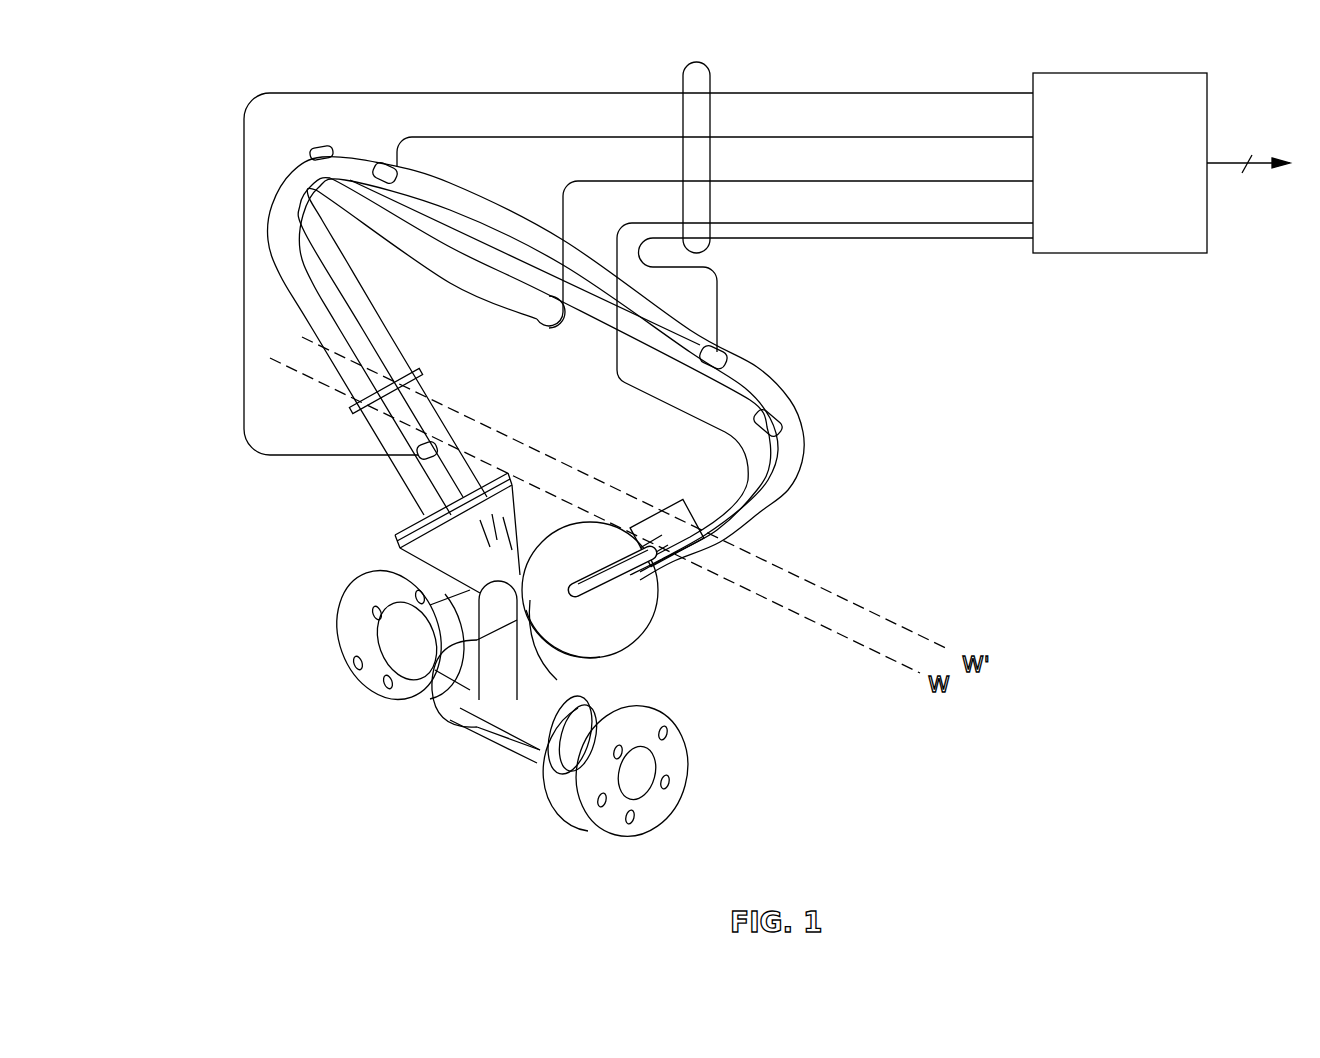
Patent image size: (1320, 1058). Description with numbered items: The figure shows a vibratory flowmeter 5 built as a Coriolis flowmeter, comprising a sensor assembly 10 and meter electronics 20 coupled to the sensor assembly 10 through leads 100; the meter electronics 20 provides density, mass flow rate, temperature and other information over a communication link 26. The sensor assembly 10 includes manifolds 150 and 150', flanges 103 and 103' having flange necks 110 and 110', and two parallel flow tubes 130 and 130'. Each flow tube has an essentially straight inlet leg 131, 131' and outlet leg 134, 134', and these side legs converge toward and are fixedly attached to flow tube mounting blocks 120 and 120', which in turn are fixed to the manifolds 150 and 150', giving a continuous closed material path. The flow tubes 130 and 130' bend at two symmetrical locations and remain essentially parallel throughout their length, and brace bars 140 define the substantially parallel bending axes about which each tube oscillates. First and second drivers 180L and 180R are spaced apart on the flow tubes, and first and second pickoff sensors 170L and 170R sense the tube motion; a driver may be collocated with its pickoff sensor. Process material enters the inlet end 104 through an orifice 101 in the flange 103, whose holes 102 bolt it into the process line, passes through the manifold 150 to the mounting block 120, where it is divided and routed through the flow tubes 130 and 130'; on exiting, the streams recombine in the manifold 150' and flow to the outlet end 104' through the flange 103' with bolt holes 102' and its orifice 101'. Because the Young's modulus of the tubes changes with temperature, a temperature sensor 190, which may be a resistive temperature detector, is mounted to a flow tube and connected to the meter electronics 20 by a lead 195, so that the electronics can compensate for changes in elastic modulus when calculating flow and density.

The vibratory flowmeter 5 is at (1140, 510).
The sensor assembly 10 is at (730, 600).
The meter electronics 20 is at (1155, 72).
The communication link 26 is at (1228, 162).
The leads 100 is at (683, 80).
The orifice 101 is at (358, 635).
The orifice 101' is at (644, 771).
The holes 102 is at (356, 676).
The bolt holes 102' is at (681, 760).
The flange 103 is at (387, 608).
The flange 103' is at (677, 798).
The inlet end 104 is at (281, 655).
The outlet end 104' is at (565, 863).
The flange neck 110 is at (400, 673).
The flange neck 110' is at (561, 767).
The flow tube mounting block 120 is at (436, 586).
The flow tube mounting block 120' is at (623, 601).
The flow tube 130 is at (533, 289).
The flow tube 130' is at (539, 272).
The inlet leg 131 is at (316, 336).
The inlet leg 131' is at (392, 337).
The outlet leg 134 is at (705, 486).
The outlet leg 134' is at (751, 473).
The brace bar 140 is at (357, 408).
The manifold 150 is at (486, 707).
The manifold 150' is at (585, 648).
The first pickoff sensor 170L is at (312, 148).
The second pickoff sensor 170R is at (785, 420).
The first driver 180L is at (385, 165).
The second driver 180R is at (727, 355).
The temperature sensor 190 is at (437, 447).
The lead 195 is at (733, 92).